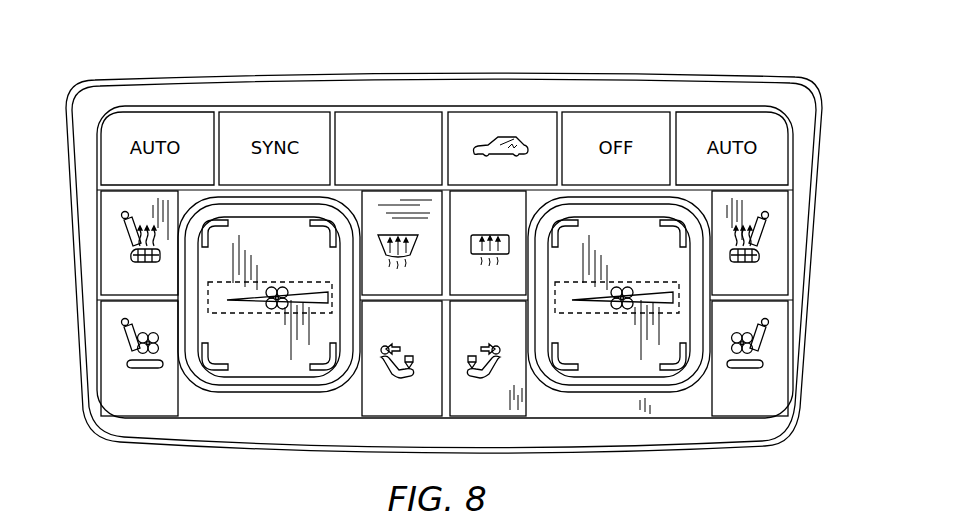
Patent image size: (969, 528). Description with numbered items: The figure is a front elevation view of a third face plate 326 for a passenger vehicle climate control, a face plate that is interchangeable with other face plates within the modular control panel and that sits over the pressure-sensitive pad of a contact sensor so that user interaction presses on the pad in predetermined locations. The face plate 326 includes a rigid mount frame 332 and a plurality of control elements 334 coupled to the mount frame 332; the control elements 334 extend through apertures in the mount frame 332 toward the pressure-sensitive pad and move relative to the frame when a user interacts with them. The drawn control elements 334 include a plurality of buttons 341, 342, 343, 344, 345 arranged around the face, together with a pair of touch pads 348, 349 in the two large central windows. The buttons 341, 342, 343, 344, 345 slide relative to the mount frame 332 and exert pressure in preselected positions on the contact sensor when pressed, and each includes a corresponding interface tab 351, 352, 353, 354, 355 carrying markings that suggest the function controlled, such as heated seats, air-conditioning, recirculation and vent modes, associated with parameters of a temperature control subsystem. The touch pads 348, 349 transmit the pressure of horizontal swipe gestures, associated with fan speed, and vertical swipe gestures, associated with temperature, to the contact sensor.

The third face plate 326 is at (107, 79).
The mount frame 332 is at (806, 160).
The control elements 334 is at (643, 106).
The button 344 is at (508, 119).
The interface tab 354 is at (475, 119).
The button 345 is at (386, 119).
The interface tab 355 is at (350, 119).
The touch pad 348 is at (279, 283).
The touch pad 349 is at (620, 283).
The interface tab 351 is at (108, 259).
The button 341 is at (108, 284).
The button 343 is at (464, 272).
The interface tab 353 is at (481, 272).
The interface tab 352 is at (763, 277).
The button 342 is at (766, 284).